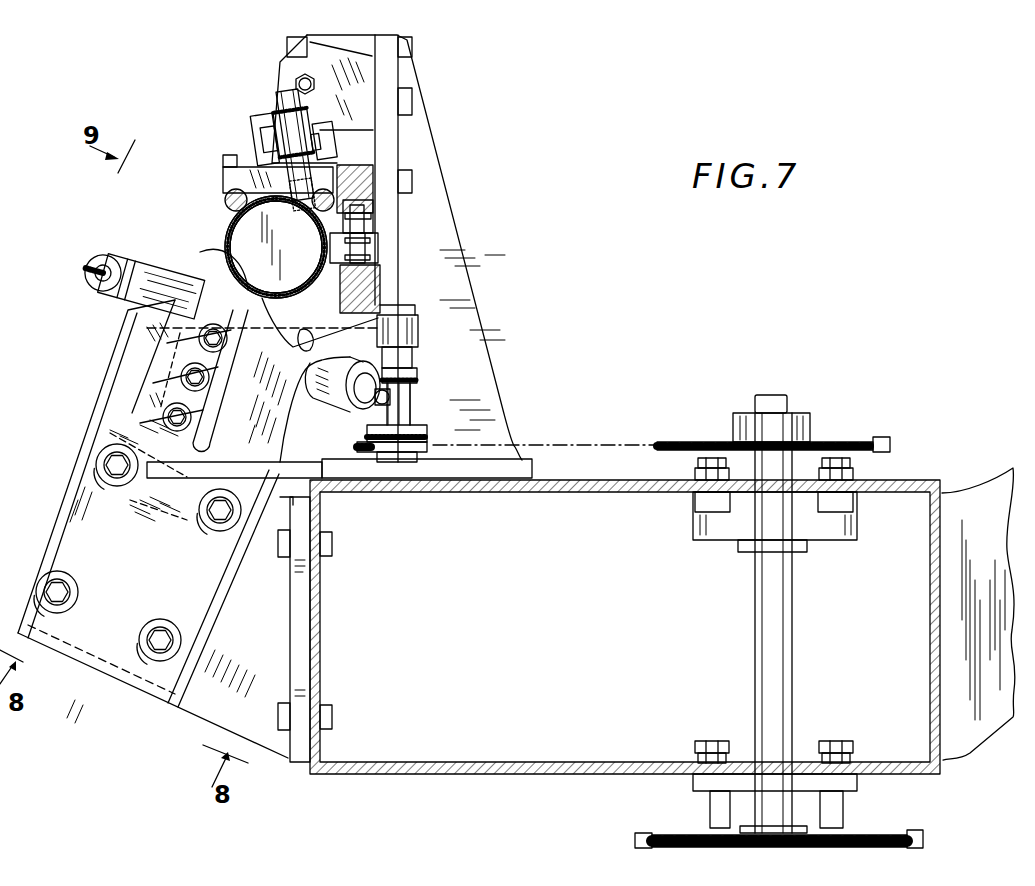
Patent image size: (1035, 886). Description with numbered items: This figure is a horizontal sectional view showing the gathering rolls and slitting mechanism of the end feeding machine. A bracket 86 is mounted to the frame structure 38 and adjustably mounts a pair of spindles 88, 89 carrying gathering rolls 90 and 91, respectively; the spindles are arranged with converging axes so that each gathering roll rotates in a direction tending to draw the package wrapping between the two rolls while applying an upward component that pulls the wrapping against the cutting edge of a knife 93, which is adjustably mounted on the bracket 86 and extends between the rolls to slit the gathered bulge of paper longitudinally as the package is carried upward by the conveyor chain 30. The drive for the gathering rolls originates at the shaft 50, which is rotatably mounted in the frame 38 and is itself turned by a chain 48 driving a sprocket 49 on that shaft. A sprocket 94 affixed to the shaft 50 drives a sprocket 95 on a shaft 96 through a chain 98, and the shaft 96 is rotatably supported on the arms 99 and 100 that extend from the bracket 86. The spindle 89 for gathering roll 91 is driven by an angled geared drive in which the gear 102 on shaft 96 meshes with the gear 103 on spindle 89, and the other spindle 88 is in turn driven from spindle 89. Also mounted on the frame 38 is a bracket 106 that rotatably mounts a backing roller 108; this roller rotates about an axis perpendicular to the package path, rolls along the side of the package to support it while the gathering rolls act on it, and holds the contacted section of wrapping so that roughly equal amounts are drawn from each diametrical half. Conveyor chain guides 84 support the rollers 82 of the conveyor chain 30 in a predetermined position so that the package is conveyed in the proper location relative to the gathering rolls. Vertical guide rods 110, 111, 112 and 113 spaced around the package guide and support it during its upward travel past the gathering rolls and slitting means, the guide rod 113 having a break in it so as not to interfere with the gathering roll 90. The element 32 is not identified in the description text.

The conveyor chain 30 is at (376, 248).
The pinion shaft assembly 32 is at (213, 144).
The frame structure 38 is at (446, 777).
The chain 48 is at (633, 838).
The sprocket 49 is at (680, 838).
The shaft 50 is at (787, 623).
The rollers 82 is at (372, 217).
The conveyor chain guides 84 is at (360, 168).
The bracket 86 is at (108, 436).
The spindle 88 is at (93, 272).
The spindle 89 is at (392, 396).
The gathering roll 90 is at (190, 268).
The gathering roll 91 is at (286, 290).
The knife 93 is at (276, 247).
The sprocket 94 is at (853, 440).
The sprocket 95 is at (427, 469).
The shaft 96 is at (411, 410).
The chain 98 is at (888, 440).
The arm 99 is at (421, 338).
The arm 100 is at (248, 465).
The gear 102 is at (419, 376).
The gear 103 is at (362, 412).
The bracket 106 is at (460, 262).
The backing roller 108 is at (297, 87).
The vertical guide rod 110 is at (224, 205).
The vertical guide rod 111 is at (312, 213).
The vertical guide rod 112 is at (318, 277).
The vertical guide rod 113 is at (213, 260).